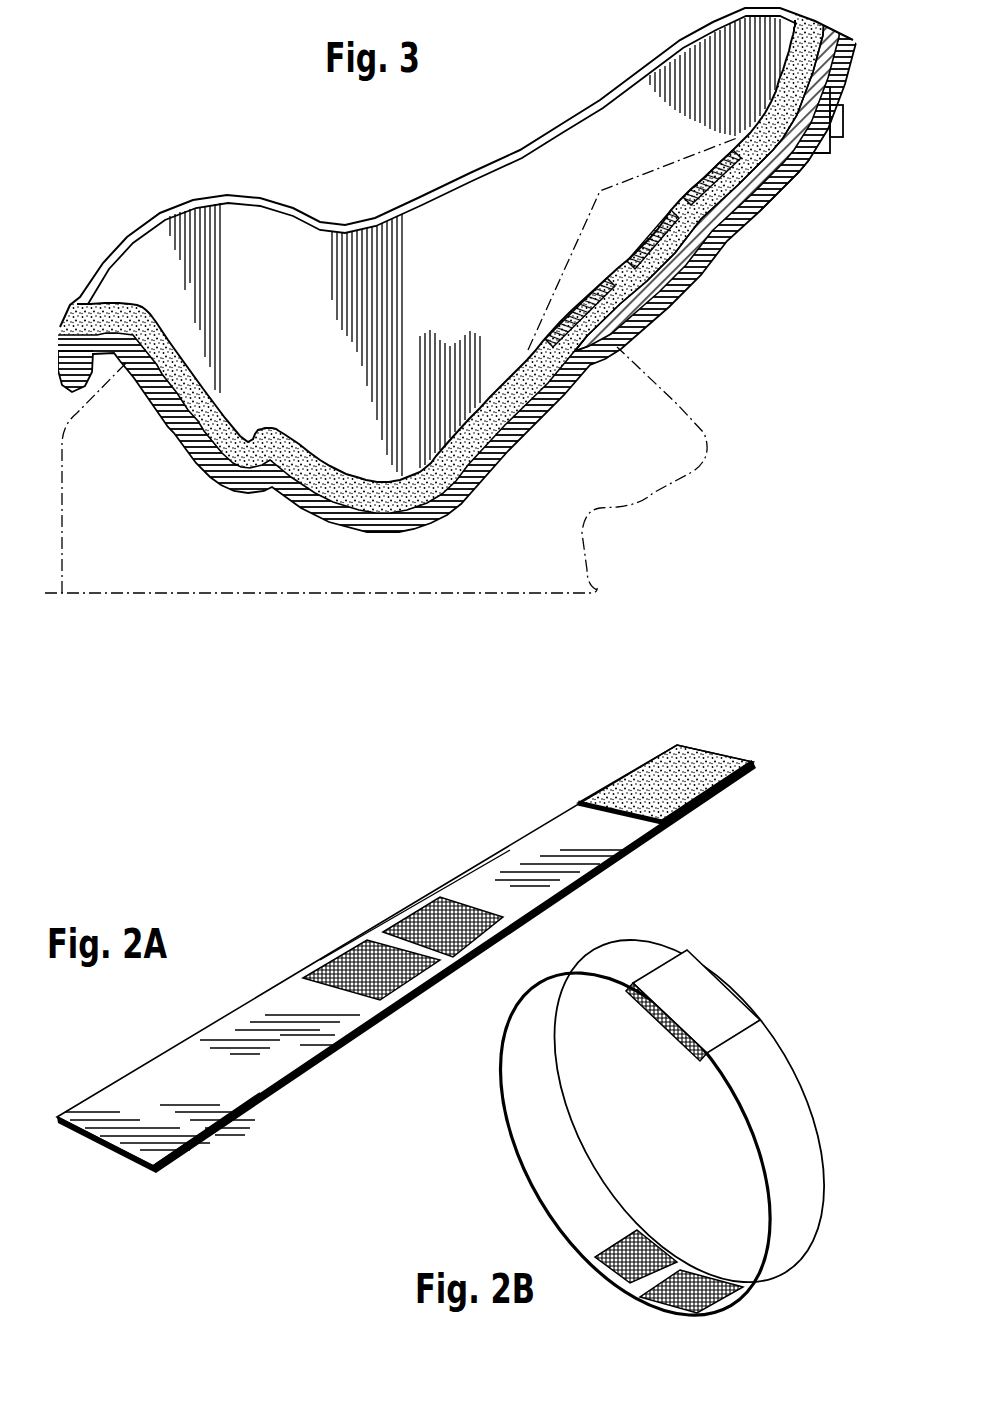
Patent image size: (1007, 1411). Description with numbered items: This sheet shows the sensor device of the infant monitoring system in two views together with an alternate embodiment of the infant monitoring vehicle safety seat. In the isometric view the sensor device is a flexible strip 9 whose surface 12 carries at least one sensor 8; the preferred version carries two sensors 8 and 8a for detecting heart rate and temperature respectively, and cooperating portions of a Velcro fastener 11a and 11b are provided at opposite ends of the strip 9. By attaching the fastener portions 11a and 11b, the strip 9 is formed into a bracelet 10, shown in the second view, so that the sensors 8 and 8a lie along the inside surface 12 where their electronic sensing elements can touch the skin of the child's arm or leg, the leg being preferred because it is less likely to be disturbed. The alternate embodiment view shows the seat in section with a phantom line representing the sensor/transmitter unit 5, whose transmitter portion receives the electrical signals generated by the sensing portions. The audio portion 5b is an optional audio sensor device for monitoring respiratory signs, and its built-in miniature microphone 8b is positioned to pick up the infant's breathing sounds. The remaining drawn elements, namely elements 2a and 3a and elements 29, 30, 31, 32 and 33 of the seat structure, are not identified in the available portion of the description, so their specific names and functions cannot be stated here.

In FIG. 3, the shoe upper 2a is at (522, 152).
In FIG. 3, the foot outline 3a is at (110, 578).
In FIG. 3, the sensor/transmitter unit 5 is at (600, 191).
In FIG. 3, the audio portion 5b is at (822, 143).
In FIG. 3, the sensor 8 is at (558, 332).
In FIG. 2A, the sensor 8 is at (420, 905).
In FIG. 2B, the sensor 8 is at (657, 1247).
In FIG. 3, the sensor 8a is at (624, 266).
In FIG. 2B, the sensor 8a is at (687, 1267).
In FIG. 3, the miniature microphone 8b is at (686, 192).
In FIG. 2A, the flexible strip 9 is at (263, 1003).
In FIG. 2B, the bracelet 10 is at (797, 1153).
In FIG. 2A, the Velcro fastener portion 11a is at (210, 1133).
In FIG. 2B, the Velcro fastener portion 11a is at (673, 1028).
In FIG. 2A, the Velcro fastener portion 11b is at (650, 763).
In FIG. 2B, the Velcro fastener portion 11b is at (700, 985).
In FIG. 2A, the flexible strip surface 12 is at (550, 837).
In FIG. 2B, the flexible strip surface 12 is at (558, 1145).
In FIG. 3, the outsole 29 is at (473, 480).
In FIG. 3, the midsole 30 is at (340, 497).
In FIG. 3, the sole plate rear end 31 is at (575, 362).
In FIG. 3, the sole plate 32 is at (693, 263).
In FIG. 3, the sole plate toe portion 33 is at (757, 187).